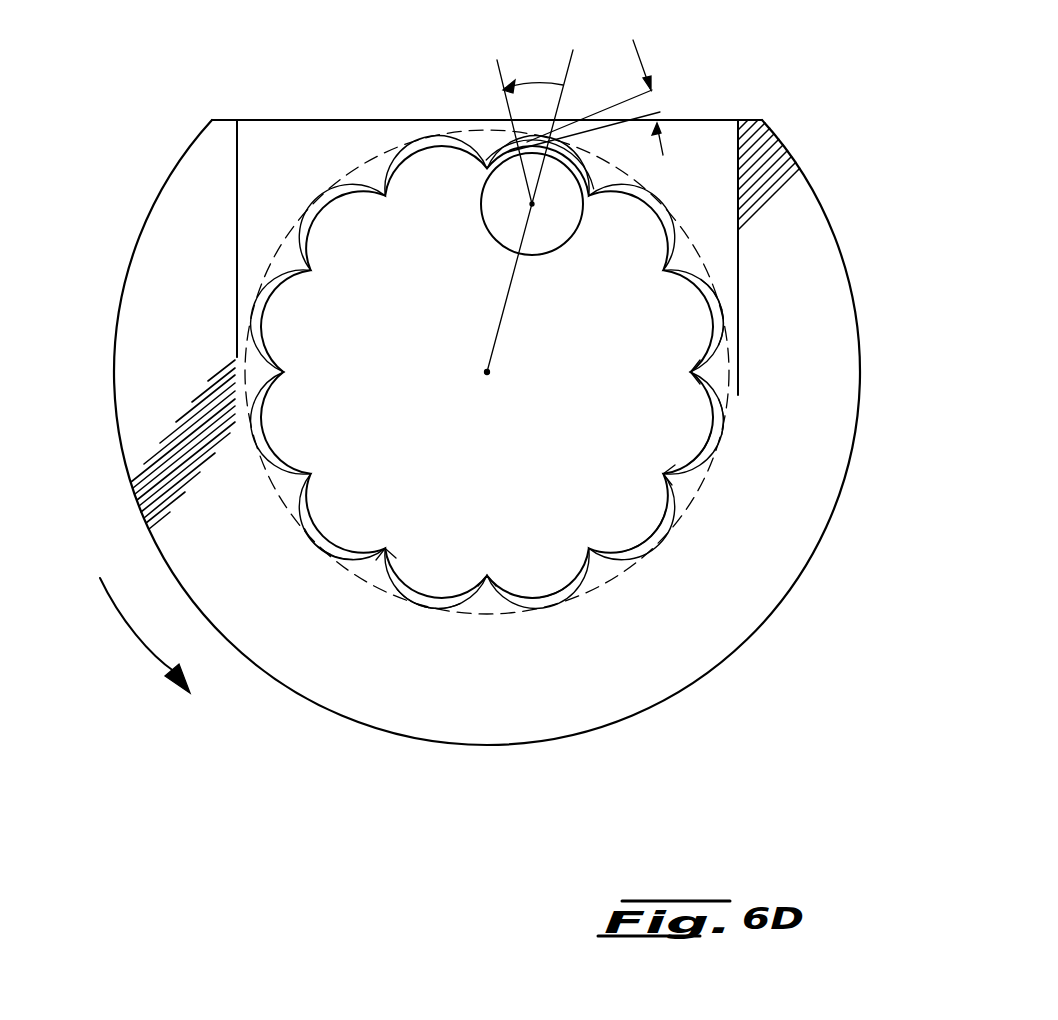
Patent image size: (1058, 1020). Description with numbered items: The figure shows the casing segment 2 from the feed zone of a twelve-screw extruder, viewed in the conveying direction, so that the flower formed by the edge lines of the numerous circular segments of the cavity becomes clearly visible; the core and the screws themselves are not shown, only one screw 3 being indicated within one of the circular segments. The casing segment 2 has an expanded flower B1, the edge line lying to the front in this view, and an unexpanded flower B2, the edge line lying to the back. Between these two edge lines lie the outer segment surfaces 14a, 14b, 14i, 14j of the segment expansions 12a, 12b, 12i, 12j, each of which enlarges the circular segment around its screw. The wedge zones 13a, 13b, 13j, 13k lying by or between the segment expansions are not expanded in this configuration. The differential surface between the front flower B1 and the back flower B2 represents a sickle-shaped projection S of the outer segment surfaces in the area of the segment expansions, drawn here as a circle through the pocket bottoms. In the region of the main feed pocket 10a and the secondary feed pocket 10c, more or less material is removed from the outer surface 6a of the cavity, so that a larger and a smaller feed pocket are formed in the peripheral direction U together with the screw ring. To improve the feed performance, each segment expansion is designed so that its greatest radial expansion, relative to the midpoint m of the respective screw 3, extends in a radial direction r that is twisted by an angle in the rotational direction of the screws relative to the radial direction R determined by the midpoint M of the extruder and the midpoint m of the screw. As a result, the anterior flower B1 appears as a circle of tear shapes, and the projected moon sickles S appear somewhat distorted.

The casing segment 2 is at (730, 583).
The screw 3 is at (497, 193).
The main feed pocket 10a is at (257, 145).
The secondary feed pocket 10c is at (713, 138).
The sickle-shaped projection S is at (697, 275).
The expanded flower B1 is at (243, 308).
The unexpanded flower B2 is at (235, 353).
The midpoint of the extruder M is at (472, 377).
The midpoint of the screw m is at (549, 205).
The radial direction R is at (539, 207).
The twisted radial direction r is at (507, 122).
The segment expansion 12a is at (730, 427).
The segment expansion 12b is at (723, 303).
The wedge zone 13a is at (663, 474).
The wedge zone 13b is at (690, 372).
The outer segment surface 14a is at (713, 443).
The outer segment surface 14b is at (735, 345).
The segment expansion 12i is at (303, 545).
The outer segment surface 14i is at (323, 562).
The wedge zone 13j is at (385, 550).
The segment expansion 12j is at (412, 610).
The outer segment surface 14j is at (433, 615).
The wedge zone 13k is at (490, 583).
The outer surface of the cavity 6a is at (560, 592).
The peripheral direction U is at (145, 635).